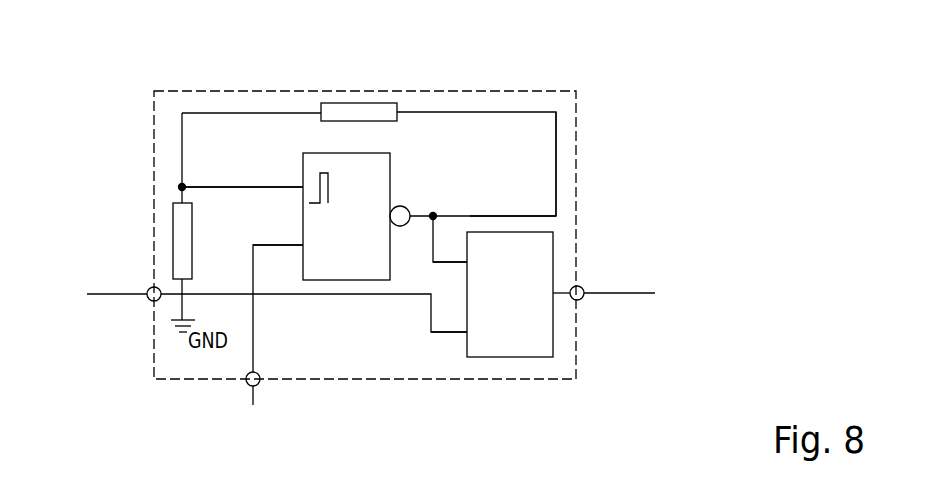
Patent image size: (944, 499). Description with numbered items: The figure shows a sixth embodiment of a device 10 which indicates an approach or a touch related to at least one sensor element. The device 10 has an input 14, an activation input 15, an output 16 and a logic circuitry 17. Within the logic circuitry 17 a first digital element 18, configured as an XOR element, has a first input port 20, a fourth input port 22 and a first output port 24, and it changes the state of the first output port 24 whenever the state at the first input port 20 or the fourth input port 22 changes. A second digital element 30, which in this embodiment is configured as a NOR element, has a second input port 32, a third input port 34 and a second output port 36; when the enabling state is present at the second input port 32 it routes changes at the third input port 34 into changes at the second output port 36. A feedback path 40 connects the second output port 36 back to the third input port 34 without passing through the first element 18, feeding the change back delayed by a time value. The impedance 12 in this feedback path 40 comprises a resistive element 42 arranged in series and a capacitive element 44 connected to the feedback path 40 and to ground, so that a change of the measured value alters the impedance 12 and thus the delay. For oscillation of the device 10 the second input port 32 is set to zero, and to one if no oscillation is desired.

The device 10 is at (574, 91).
The impedance 12 is at (380, 71).
The input 14 is at (147, 300).
The activation input 15 is at (247, 385).
The output 16 is at (580, 299).
The logic circuitry 17 is at (541, 175).
The first digital element 18 is at (497, 357).
The first input port 20 is at (467, 336).
The fourth input port 22 is at (467, 262).
The first output port 24 is at (553, 296).
The second digital element 30 is at (334, 280).
The second input port 32 is at (301, 246).
The third input port 34 is at (303, 189).
The second output port 36 is at (406, 224).
The feedback path 40 is at (556, 189).
The resistive element 42 is at (382, 111).
The capacitive element 44 is at (185, 243).